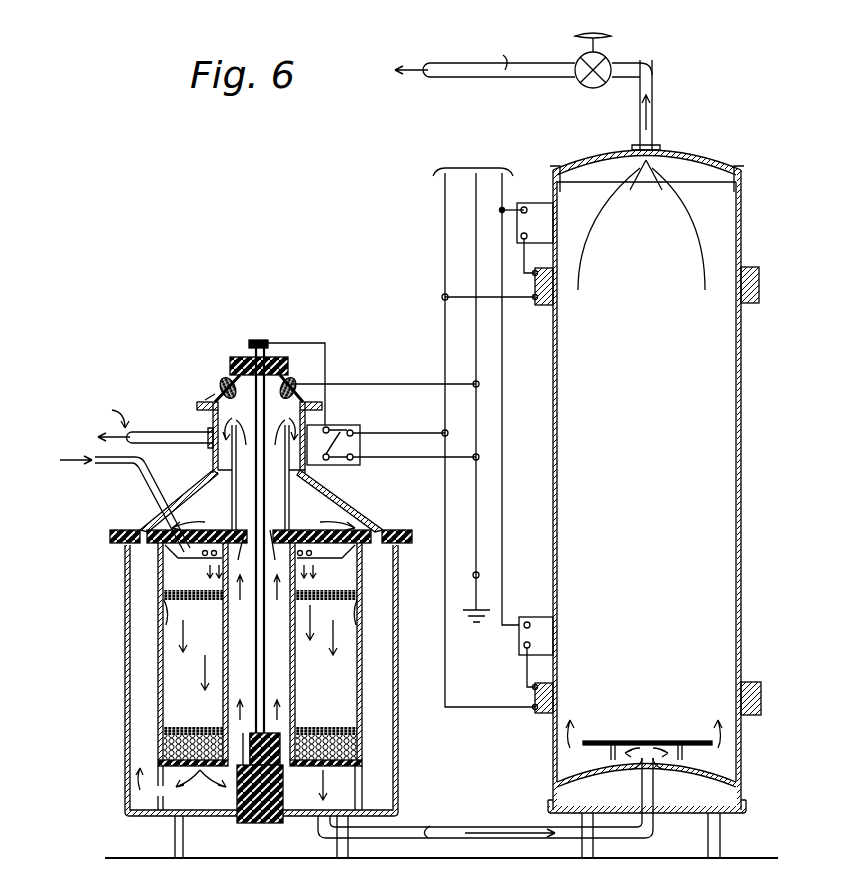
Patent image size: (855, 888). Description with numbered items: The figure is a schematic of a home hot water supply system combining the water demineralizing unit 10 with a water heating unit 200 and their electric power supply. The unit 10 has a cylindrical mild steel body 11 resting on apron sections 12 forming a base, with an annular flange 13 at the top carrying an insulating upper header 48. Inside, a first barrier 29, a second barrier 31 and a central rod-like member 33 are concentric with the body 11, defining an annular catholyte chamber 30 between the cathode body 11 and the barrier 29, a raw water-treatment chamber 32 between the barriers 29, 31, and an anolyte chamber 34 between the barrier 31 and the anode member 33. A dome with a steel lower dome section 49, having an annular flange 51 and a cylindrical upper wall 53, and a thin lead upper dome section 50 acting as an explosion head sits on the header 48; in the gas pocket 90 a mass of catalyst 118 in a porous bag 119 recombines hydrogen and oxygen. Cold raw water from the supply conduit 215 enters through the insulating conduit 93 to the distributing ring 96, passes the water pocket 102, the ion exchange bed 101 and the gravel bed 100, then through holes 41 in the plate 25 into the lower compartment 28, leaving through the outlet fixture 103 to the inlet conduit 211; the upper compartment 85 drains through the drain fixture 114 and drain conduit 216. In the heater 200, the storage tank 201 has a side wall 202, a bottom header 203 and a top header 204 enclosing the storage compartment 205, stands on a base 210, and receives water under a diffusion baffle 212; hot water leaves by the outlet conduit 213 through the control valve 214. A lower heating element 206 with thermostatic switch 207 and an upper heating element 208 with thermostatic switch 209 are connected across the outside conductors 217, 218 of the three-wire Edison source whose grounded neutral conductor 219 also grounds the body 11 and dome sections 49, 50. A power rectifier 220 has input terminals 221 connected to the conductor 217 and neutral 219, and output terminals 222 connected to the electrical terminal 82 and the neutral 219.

The water demineralizing unit 10 is at (90, 566).
The body 11 is at (125, 683).
The apron sections 12 is at (175, 840).
The annular flange 13 is at (410, 546).
The plate 25 is at (299, 778).
The lower compartment 28 is at (207, 806).
The first barrier 29 is at (163, 660).
The annular chamber 30 is at (152, 637).
The second barrier 31 is at (228, 625).
The annular chamber 32 is at (332, 682).
The rod-like member 33 is at (258, 690).
The annular chamber 34 is at (290, 602).
The holes 41 is at (331, 780).
The upper header 48 is at (418, 540).
The lower dome section 49 is at (360, 500).
The upper dome section 50 is at (210, 398).
The annular flange 51 is at (412, 530).
The upper wall 53 is at (324, 444).
The electrical terminal 82 is at (268, 342).
The upper compartment 85 is at (318, 518).
The gas pocket 90 is at (300, 388).
The conduit 93 is at (185, 525).
The distributing ring 96 is at (345, 556).
The bed of gravel 100 is at (163, 748).
The bed of ion exchange material 101 is at (192, 727).
The water pocket 102 is at (196, 583).
The outlet fixture 103 is at (317, 830).
The drain fixture 114 is at (210, 440).
The mass of catalyst 118 is at (224, 384).
The porous bag 119 is at (290, 382).
The water heating unit 200 is at (593, 435).
The storage tank 201 is at (745, 440).
The side wall 202 is at (742, 218).
The bottom header 203 is at (745, 770).
The top header 204 is at (700, 160).
The water storage compartment 205 is at (664, 478).
The lower electric heating element 206 is at (761, 684).
The thermostatic switch 207 is at (553, 615).
The upper electric heating element 208 is at (759, 278).
The thermostatic switch 209 is at (553, 224).
The supporting base 210 is at (745, 812).
The inlet conduit 211 is at (655, 795).
The diffusion baffle 212 is at (670, 740).
The outlet conduit 213 is at (555, 72).
The control valve 214 is at (608, 60).
The supply conduit 215 is at (140, 468).
The drain conduit 216 is at (180, 418).
The outside conductor 217 is at (445, 228).
The outside conductor 218 is at (502, 438).
The grounded neutral conductor 219 is at (476, 530).
The power rectifier 220 is at (362, 425).
The input terminals 221 is at (354, 457).
The output terminals 222 is at (328, 428).